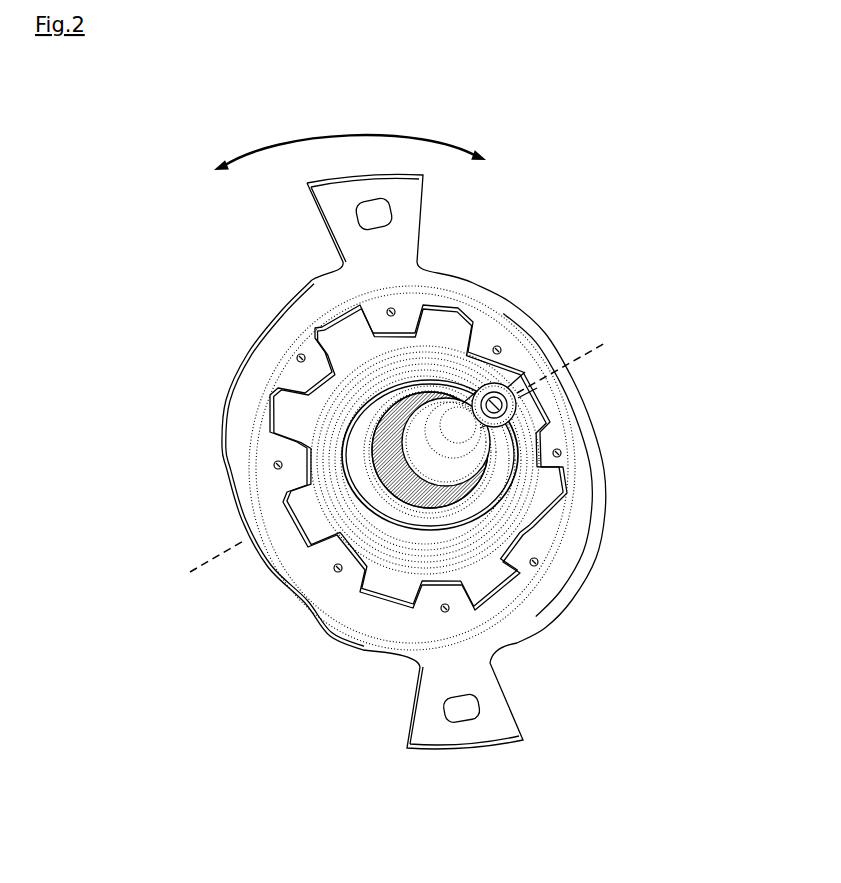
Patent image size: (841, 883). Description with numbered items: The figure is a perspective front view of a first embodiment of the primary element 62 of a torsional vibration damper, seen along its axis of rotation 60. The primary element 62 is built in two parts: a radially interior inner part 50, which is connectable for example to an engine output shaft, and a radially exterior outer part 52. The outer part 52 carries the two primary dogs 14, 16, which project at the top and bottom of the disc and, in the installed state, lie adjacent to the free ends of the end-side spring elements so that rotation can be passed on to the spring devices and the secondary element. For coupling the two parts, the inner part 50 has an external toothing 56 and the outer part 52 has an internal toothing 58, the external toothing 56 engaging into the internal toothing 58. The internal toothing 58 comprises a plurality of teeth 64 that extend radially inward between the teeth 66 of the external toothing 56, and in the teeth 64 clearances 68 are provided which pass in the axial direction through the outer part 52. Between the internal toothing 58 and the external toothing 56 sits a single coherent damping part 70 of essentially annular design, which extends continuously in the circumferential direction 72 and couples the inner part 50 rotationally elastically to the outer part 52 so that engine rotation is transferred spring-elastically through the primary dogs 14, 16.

The primary dog 14 is at (405, 212).
The primary dog 16 is at (497, 722).
The inner part 50 is at (391, 547).
The outer part 52 is at (360, 620).
The external toothing 56 is at (548, 506).
The internal toothing 58 is at (540, 548).
The axis of rotation 60 is at (563, 365).
The primary element 62 is at (655, 363).
The teeth of the internal toothing 64 is at (393, 325).
The teeth of the external toothing 66 is at (297, 412).
The clearances 68 is at (561, 454).
The damping part 70 is at (453, 320).
The circumferential direction 72 is at (360, 135).